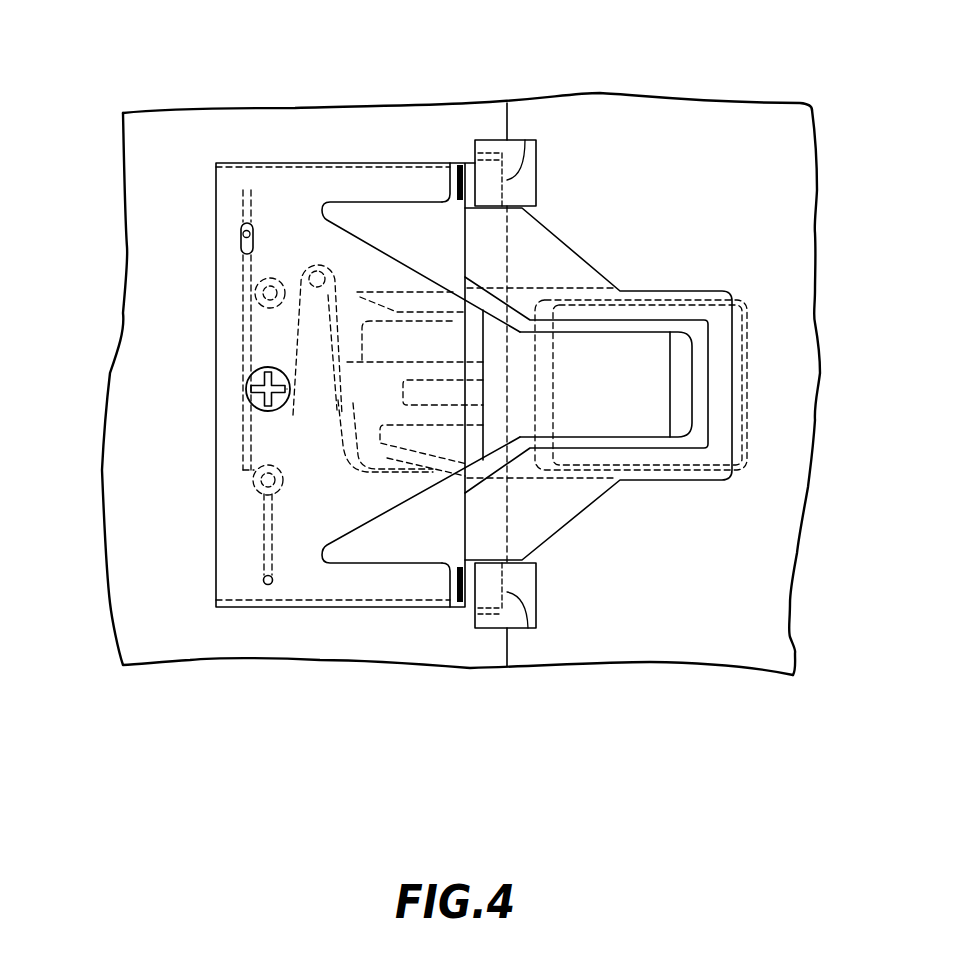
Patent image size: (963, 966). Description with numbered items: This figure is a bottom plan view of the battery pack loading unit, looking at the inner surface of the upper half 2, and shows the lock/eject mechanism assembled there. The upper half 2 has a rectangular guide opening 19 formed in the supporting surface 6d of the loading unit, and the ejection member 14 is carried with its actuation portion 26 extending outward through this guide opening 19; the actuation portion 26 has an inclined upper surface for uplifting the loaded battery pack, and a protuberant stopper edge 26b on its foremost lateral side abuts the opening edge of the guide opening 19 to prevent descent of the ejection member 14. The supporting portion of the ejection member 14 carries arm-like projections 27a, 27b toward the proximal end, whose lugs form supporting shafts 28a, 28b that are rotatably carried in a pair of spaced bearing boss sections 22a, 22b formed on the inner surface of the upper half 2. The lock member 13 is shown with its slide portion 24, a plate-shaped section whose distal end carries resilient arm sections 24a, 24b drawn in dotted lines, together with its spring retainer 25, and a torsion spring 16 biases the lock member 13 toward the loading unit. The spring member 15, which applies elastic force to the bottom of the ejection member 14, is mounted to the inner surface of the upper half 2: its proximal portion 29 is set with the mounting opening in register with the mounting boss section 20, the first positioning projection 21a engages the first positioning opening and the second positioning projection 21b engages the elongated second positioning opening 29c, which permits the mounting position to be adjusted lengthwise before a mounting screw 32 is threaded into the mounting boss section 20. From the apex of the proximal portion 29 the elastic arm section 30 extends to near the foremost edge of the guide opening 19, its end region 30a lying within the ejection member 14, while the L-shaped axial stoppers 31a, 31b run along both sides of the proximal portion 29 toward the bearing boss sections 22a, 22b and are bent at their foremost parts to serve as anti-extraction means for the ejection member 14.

The upper half 2 is at (297, 108).
The supporting surface 6d is at (783, 230).
The lock member 13 is at (353, 467).
The ejection member 14 is at (707, 455).
The spring member 15 is at (216, 525).
The torsion spring 16 is at (297, 337).
The guide opening 19 is at (670, 288).
The mounting boss section 20 is at (245, 398).
The first positioning projection 21a is at (263, 578).
The second positioning projection 21b is at (241, 228).
The bearing boss section 22a is at (485, 628).
The bearing boss section 22b is at (497, 140).
The slide portion 24 is at (423, 427).
The resilient arm section 24a is at (370, 476).
The resilient arm section 24b is at (364, 294).
The spring retainer 25 is at (330, 400).
The actuation portion 26 is at (684, 470).
The protuberant stopper edge 26b is at (748, 403).
The arm-like projection 27a is at (550, 507).
The arm-like projection 27b is at (550, 250).
The supporting shaft 28a is at (528, 628).
The supporting shaft 28b is at (525, 140).
The proximal portion 29 is at (295, 565).
The second positioning opening 29c is at (241, 243).
The elastic arm section 30 is at (598, 400).
The socket end 30a is at (683, 368).
The axial stopper 31a is at (453, 587).
The axial stopper 31b is at (452, 181).
The mounting screw 32 is at (245, 390).